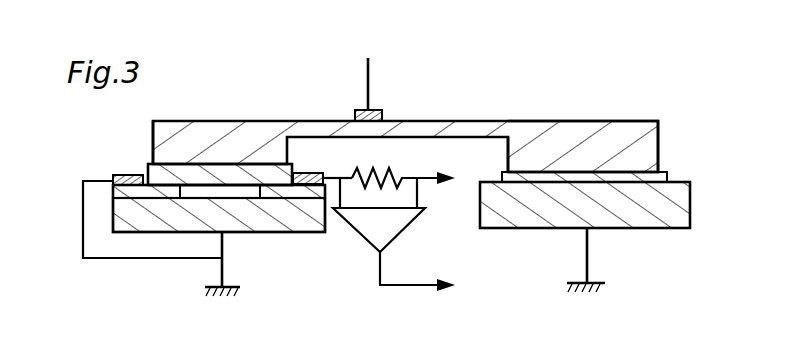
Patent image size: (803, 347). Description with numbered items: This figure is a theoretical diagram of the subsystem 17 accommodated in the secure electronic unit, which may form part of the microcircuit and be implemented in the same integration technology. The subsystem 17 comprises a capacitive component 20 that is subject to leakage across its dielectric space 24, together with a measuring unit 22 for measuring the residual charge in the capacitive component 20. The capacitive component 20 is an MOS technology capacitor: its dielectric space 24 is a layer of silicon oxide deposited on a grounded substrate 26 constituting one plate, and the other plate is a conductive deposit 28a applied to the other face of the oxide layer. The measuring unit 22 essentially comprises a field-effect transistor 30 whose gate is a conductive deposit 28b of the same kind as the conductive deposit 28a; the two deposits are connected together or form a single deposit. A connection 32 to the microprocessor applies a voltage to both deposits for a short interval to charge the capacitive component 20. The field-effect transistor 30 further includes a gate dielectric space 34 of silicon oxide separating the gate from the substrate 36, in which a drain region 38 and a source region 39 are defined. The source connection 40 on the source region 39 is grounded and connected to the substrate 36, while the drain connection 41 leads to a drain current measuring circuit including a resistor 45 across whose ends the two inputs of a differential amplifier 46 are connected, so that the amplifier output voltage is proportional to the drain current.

The subsystem 17 is at (524, 92).
The capacitive component 20 is at (678, 160).
The measuring unit 22 is at (328, 256).
The dielectric space 24 is at (600, 168).
The substrate 26 is at (608, 208).
The conductive deposit 28a is at (582, 133).
The conductive deposit 28b is at (235, 133).
The field-effect transistor 30 is at (138, 154).
The connection 32 is at (370, 110).
The gate dielectric space 34 is at (207, 165).
The substrate 36 is at (233, 212).
The drain region 38 is at (277, 205).
The source region 39 is at (128, 233).
The source connection 40 is at (122, 173).
The drain connection 41 is at (300, 157).
The resistor 45 is at (385, 167).
The differential amplifier 46 is at (390, 230).